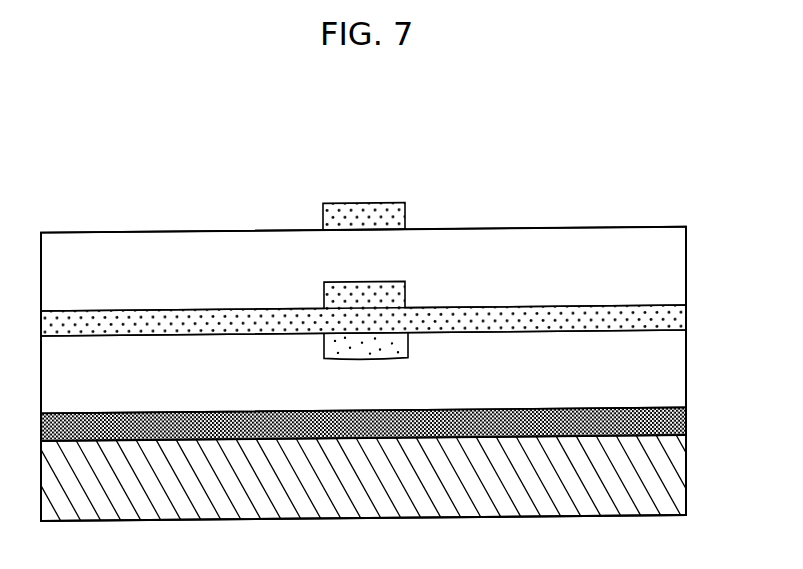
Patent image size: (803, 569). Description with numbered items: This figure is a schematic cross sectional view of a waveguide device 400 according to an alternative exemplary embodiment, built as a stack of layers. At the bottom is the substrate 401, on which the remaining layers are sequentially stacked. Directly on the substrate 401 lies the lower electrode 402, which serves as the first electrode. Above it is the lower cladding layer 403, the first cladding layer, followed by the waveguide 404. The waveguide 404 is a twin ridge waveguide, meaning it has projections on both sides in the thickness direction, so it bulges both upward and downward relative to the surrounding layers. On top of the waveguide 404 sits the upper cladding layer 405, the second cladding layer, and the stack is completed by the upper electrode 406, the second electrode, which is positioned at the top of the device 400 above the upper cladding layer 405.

The waveguide device 400 is at (238, 144).
The substrate 401 is at (676, 475).
The lower electrode 402 is at (687, 420).
The lower cladding layer 403 is at (676, 364).
The waveguide 404 is at (687, 316).
The upper cladding layer 405 is at (676, 264).
The upper electrode 406 is at (377, 200).